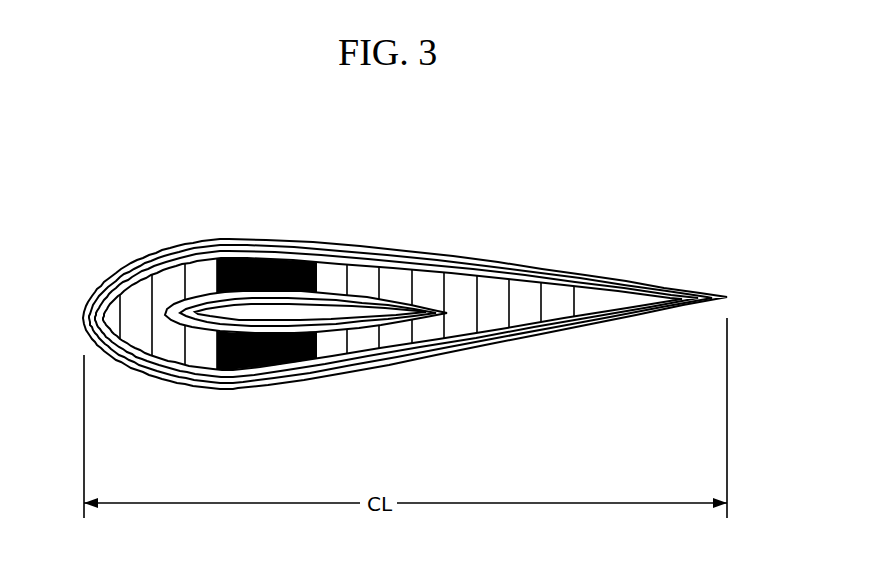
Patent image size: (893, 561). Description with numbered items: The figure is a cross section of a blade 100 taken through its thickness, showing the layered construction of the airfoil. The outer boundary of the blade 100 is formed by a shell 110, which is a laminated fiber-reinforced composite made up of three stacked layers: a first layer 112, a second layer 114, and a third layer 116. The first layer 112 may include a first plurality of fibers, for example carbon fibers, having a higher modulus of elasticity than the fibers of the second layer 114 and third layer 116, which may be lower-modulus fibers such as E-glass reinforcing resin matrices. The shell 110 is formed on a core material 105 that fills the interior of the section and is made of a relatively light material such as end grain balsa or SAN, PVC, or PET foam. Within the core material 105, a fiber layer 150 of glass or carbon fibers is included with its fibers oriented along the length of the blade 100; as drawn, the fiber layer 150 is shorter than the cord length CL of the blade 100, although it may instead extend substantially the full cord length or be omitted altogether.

The blade 100 is at (159, 151).
The core material 105 is at (493, 314).
The shell 110 is at (258, 239).
The first layer 112 is at (435, 269).
The second layer 114 is at (385, 261).
The third layer 116 is at (347, 247).
The fiber layer 150 is at (297, 358).